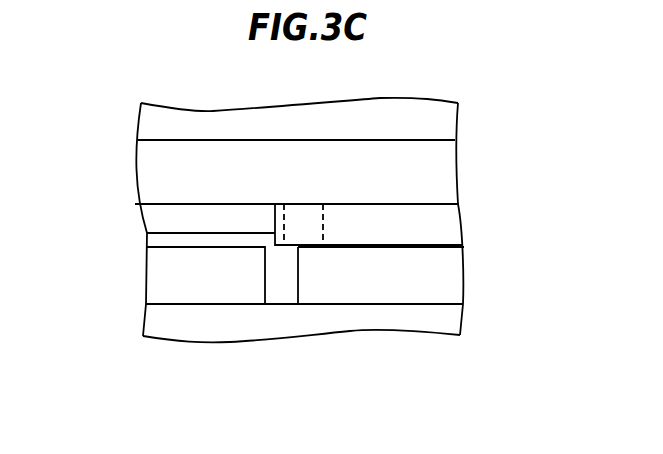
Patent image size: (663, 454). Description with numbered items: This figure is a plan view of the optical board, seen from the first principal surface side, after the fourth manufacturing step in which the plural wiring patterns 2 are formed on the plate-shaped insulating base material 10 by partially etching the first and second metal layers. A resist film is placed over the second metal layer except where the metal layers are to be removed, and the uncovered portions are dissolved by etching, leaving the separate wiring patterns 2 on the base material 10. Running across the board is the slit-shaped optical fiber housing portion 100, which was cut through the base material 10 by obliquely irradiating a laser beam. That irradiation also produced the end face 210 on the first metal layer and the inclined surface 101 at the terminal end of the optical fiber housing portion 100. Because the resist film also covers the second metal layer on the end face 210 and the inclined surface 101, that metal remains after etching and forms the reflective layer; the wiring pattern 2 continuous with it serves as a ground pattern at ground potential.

The base material 10 is at (443, 122).
The optical fiber housing portion 100 is at (442, 217).
The end face 210 is at (277, 207).
The inclined surface 101 is at (303, 213).
The wiring patterns 2 is at (160, 278).